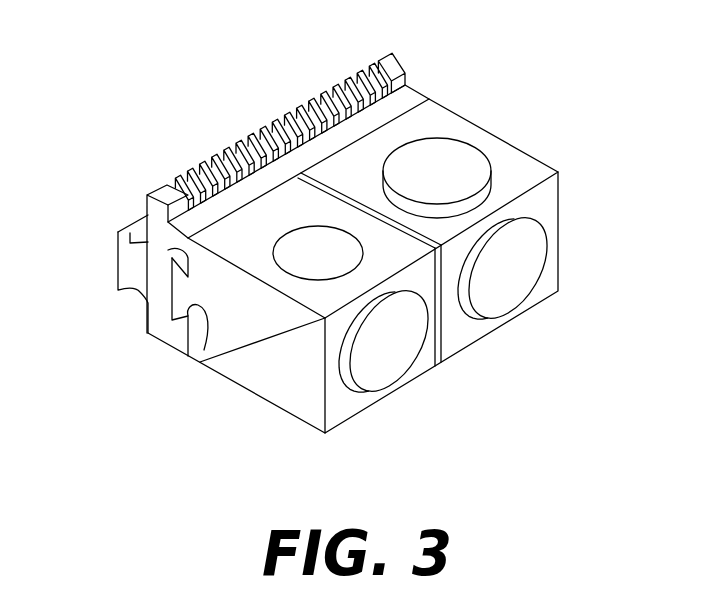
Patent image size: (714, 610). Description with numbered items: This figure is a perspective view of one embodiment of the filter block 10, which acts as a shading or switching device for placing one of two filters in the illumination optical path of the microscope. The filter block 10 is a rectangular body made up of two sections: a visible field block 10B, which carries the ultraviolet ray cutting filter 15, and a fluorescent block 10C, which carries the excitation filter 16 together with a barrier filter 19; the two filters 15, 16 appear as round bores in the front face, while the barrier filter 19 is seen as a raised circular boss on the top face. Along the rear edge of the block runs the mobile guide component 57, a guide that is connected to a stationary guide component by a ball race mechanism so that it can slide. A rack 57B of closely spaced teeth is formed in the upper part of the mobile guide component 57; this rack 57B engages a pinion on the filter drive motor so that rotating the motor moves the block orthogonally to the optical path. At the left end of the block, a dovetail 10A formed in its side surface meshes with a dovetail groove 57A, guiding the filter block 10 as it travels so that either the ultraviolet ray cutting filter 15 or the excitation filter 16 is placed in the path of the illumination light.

The filter block 10 is at (440, 103).
The dovetail 10A is at (168, 250).
The visible field block 10B is at (293, 416).
The fluorescent block 10C is at (558, 172).
The ultraviolet ray cutting filter 15 is at (387, 371).
The excitation filter 16 is at (512, 300).
The barrier filter 19 is at (490, 152).
The mobile guide component 57 is at (148, 333).
The dovetail groove 57A is at (204, 350).
The rack 57B is at (347, 74).